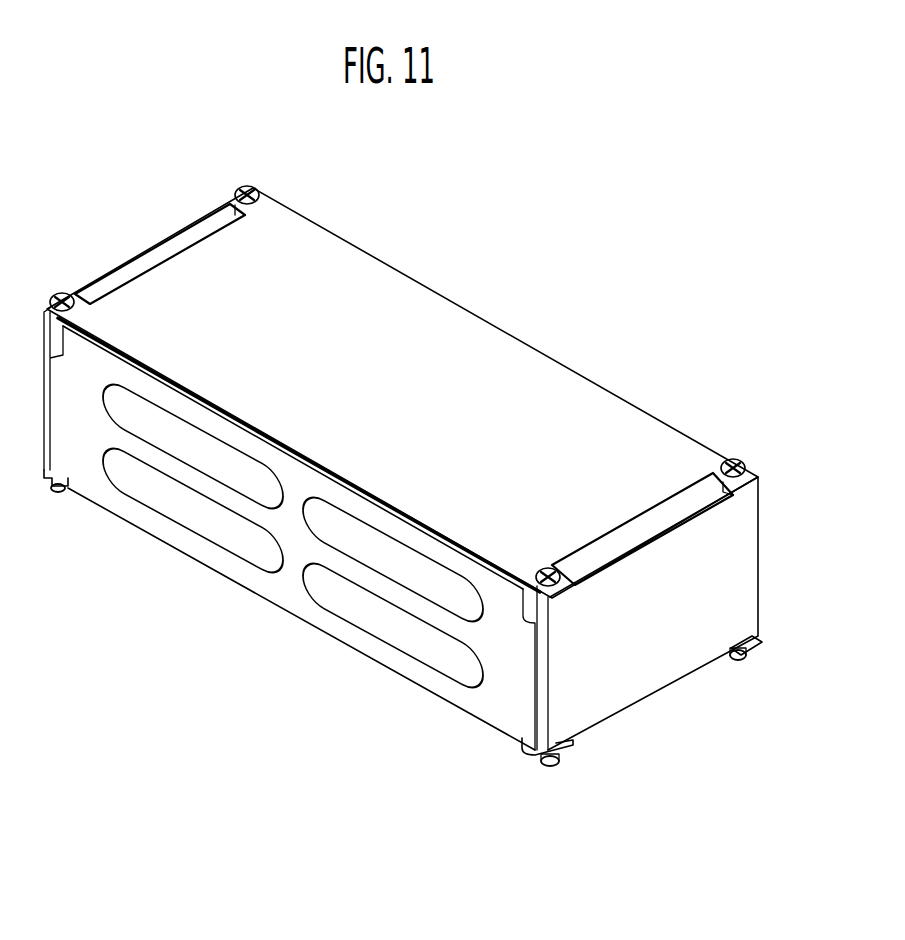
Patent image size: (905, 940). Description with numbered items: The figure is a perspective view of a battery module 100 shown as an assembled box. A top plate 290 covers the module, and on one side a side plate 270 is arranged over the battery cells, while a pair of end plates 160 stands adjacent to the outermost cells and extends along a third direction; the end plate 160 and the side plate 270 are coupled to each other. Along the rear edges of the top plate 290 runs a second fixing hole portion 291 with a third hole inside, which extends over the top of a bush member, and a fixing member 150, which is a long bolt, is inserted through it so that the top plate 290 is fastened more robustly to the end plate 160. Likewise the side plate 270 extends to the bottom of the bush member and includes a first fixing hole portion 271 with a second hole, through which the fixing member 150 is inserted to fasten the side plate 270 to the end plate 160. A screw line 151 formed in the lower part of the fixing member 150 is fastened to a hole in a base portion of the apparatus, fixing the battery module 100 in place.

The battery module 100 is at (617, 208).
The top plate 290 is at (490, 350).
The second fixing hole portion 291 is at (757, 469).
The fixing member 150 is at (738, 462).
The side plate 270 is at (495, 714).
The end plate 160 is at (667, 678).
The first fixing hole portion 271 is at (575, 748).
The screw line 151 is at (545, 768).